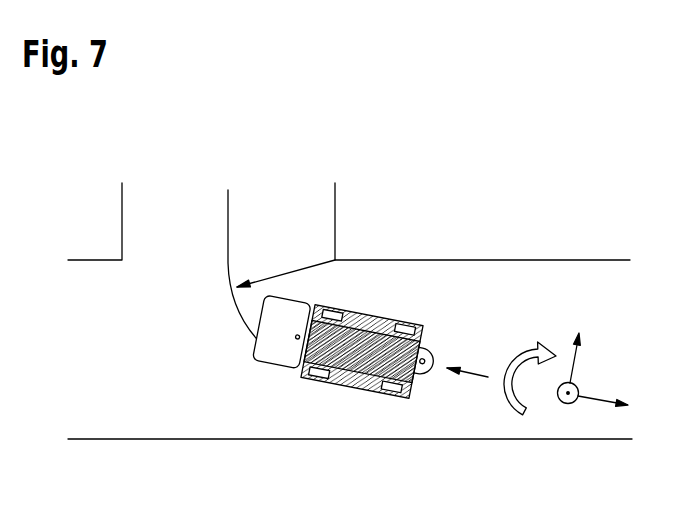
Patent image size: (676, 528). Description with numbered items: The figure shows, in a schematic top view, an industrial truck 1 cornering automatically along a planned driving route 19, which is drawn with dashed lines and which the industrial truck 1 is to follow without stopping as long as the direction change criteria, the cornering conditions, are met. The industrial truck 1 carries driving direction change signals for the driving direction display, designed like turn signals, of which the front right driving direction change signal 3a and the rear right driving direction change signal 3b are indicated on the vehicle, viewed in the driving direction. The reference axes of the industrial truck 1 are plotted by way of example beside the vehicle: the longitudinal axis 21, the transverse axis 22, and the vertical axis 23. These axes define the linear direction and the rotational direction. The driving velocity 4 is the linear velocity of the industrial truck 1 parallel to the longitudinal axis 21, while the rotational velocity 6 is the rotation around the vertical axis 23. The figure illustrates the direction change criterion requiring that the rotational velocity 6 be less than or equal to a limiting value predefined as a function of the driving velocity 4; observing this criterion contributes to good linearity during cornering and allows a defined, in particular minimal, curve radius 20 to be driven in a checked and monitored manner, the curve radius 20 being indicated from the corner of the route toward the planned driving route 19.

The industrial truck 1 is at (270, 359).
The front right driving direction change signal 3a is at (265, 295).
The rear right driving direction change signal 3b is at (425, 341).
The driving velocity 4 is at (470, 376).
The rotational velocity 6 is at (517, 410).
The planned driving route 19 is at (240, 312).
The curve radius 20 is at (310, 267).
The longitudinal axis 21 is at (598, 400).
The transverse axis 22 is at (578, 362).
The vertical axis 23 is at (567, 404).